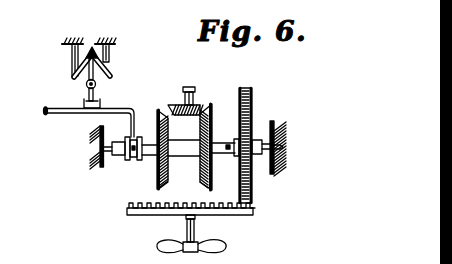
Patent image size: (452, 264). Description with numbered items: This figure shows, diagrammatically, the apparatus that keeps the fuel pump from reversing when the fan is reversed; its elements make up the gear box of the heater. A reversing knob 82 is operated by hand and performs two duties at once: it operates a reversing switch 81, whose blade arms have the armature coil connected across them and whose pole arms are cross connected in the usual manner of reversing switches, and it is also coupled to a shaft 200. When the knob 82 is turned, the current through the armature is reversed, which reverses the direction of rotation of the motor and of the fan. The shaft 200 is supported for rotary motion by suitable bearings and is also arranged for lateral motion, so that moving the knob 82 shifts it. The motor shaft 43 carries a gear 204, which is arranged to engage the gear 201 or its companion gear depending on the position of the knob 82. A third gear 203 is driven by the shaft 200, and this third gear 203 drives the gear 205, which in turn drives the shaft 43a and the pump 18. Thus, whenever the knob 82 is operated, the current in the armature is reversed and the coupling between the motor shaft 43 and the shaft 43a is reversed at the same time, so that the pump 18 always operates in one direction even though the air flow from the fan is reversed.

The reversing switch 81 is at (84, 73).
The reversing knob 82 is at (46, 115).
The gear 201 is at (157, 112).
The motor shaft 43 is at (188, 87).
The gear 204 is at (203, 106).
The shaft 200 is at (195, 141).
The third gear 203 is at (253, 183).
The gear 205 is at (236, 215).
The shaft 43a is at (187, 228).
The pump 18 is at (221, 250).